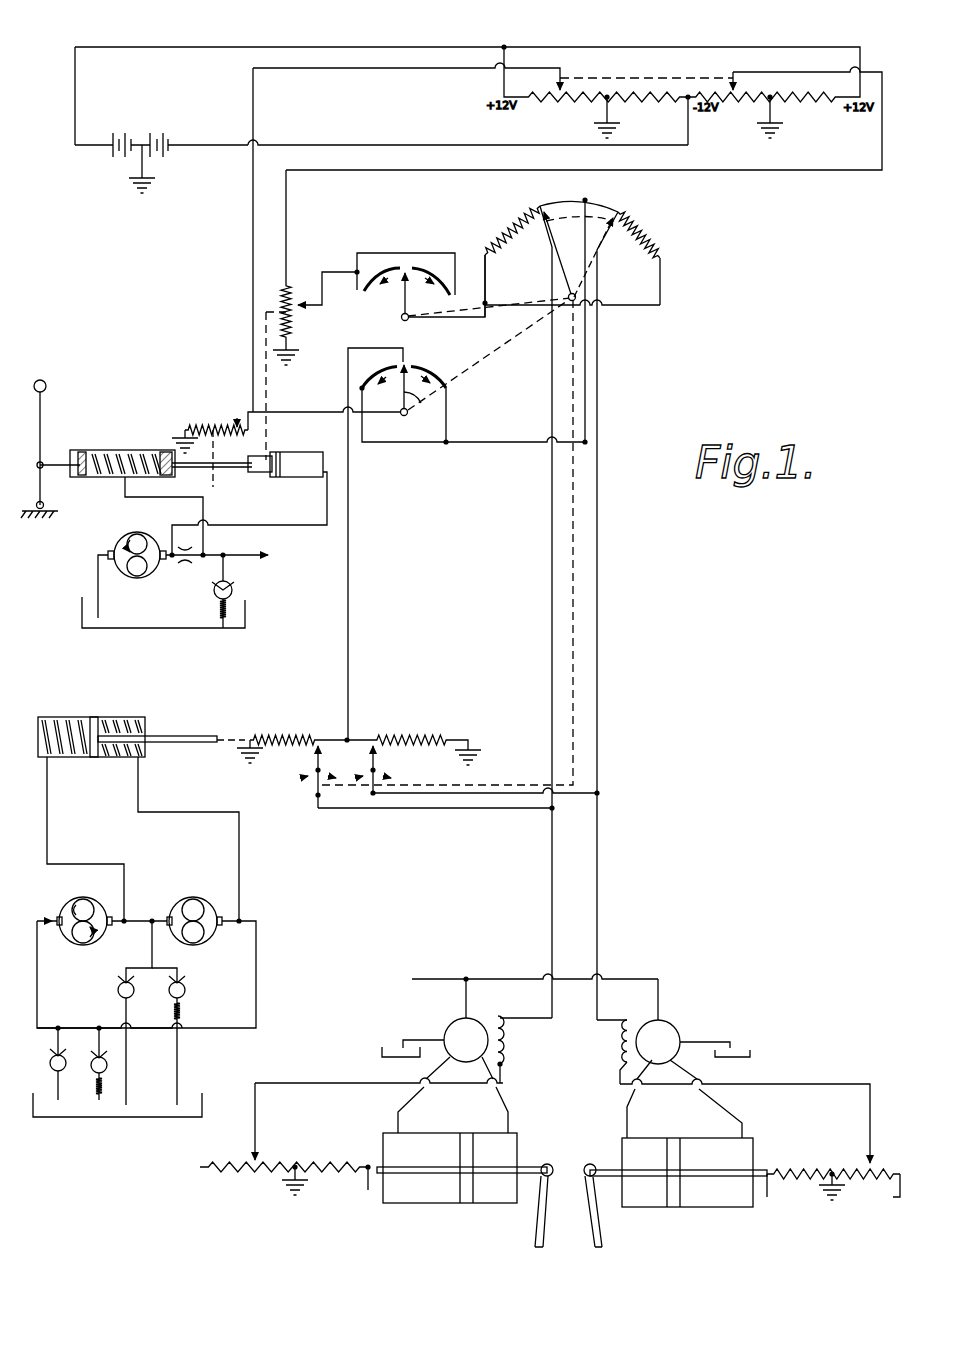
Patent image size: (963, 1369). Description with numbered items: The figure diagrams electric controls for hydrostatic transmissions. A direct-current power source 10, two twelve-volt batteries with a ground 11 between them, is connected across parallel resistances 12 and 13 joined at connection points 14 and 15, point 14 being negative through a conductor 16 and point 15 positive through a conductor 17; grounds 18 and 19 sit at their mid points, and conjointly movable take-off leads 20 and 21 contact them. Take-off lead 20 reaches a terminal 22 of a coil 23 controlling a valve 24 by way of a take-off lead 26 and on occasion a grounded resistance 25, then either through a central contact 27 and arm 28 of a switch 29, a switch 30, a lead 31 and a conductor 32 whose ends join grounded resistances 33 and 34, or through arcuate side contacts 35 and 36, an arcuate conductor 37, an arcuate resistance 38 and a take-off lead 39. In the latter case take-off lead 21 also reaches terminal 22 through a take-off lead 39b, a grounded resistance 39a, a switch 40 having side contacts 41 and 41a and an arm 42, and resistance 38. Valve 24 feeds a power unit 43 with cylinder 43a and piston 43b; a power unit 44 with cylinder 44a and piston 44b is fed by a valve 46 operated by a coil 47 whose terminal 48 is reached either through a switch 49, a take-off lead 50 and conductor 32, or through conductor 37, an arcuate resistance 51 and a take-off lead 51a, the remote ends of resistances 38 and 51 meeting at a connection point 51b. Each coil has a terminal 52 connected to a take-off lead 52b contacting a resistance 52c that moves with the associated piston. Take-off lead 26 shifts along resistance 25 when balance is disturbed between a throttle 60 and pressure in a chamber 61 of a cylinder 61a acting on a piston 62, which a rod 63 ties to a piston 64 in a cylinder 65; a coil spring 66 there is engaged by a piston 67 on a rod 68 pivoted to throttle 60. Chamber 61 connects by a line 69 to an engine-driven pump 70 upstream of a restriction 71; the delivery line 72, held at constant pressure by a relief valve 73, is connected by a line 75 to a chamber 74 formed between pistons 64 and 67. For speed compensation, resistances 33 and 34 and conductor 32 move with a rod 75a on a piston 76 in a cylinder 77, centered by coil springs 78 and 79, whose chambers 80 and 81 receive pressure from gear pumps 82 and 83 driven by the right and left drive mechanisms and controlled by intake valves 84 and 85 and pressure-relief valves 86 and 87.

The direct-current source of power 10 is at (122, 156).
The ground 11 is at (150, 180).
The resistance 12 is at (657, 102).
The resistance 13 is at (748, 101).
The point of connection 14 is at (688, 95).
The point of connection 15 is at (504, 46).
The conductor 16 is at (206, 144).
The conductor 17 is at (196, 46).
The ground 18 is at (603, 118).
The ground 19 is at (778, 122).
The take-off lead 20 is at (566, 84).
The take-off lead 21 is at (735, 68).
The terminal 22 is at (506, 1023).
The coil 23 is at (496, 1016).
The valve 24 is at (453, 1022).
The resistance 25 is at (196, 427).
The take-off lead 26 is at (234, 427).
The central contact 27 is at (408, 363).
The arm 28 is at (417, 416).
The switch 29 is at (441, 364).
The switch 30 is at (315, 794).
The lead 31 is at (351, 614).
The conductor 32 is at (328, 736).
The resistance 33 is at (267, 736).
The resistance 34 is at (415, 736).
The arcuate side contact 35 is at (439, 382).
The arcuate side contact 36 is at (387, 377).
The arcuate conductor 37 is at (586, 198).
The arcuate resistance 38 is at (511, 232).
The take-off lead 39 is at (553, 250).
The resistance 39a is at (292, 321).
The take-off lead 39b is at (310, 300).
The switch 40 is at (448, 262).
The side contact 41 is at (420, 266).
The side contact 41a is at (384, 268).
The arm 42 is at (402, 313).
The power unit 43 is at (441, 1131).
The cylinder 43a is at (410, 1204).
The piston 43b is at (466, 1204).
The power unit 44 is at (729, 1137).
The cylinder 44a is at (651, 1138).
The piston 44b is at (672, 1208).
The valve 46 is at (681, 1030).
The coil 47 is at (632, 1020).
The terminal 48 is at (621, 1030).
The switch 49 is at (371, 796).
The take-off lead 50 is at (376, 760).
The arcuate resistance 51 is at (646, 242).
The take-off lead 51a is at (606, 242).
The connection point 51b is at (487, 301).
The terminal 52 is at (504, 1066).
The take-off lead 52b is at (256, 1120).
The resistance 52c is at (336, 1162).
The throttle 60 is at (46, 391).
The chamber 61 is at (284, 452).
The cylinder 61a is at (316, 452).
The piston 62 is at (275, 479).
The rod 63 is at (213, 482).
The piston 64 is at (168, 450).
The cylinder 65 is at (119, 452).
The coil spring 66 is at (118, 477).
The piston 67 is at (82, 478).
The rod 68 is at (60, 453).
The line 69 is at (327, 500).
The engine-driven pump 70 is at (112, 551).
The restriction 71 is at (185, 565).
The delivery line 72 is at (250, 555).
The relief valve 73 is at (236, 588).
The chamber 74 is at (143, 452).
The line 75 is at (137, 497).
The rod 75a is at (196, 744).
The piston 76 is at (95, 716).
The cylinder 77 is at (136, 718).
The coil spring 78 is at (148, 735).
The coil spring 79 is at (50, 716).
The chamber 80 is at (120, 758).
The chamber 81 is at (65, 760).
The gear pump 82 is at (211, 897).
The gear pump 83 is at (85, 897).
The intake valve 84 is at (118, 990).
The intake valve 85 is at (50, 1057).
The pressure-relief valve 86 is at (186, 989).
The pressure-relief valve 87 is at (104, 1060).